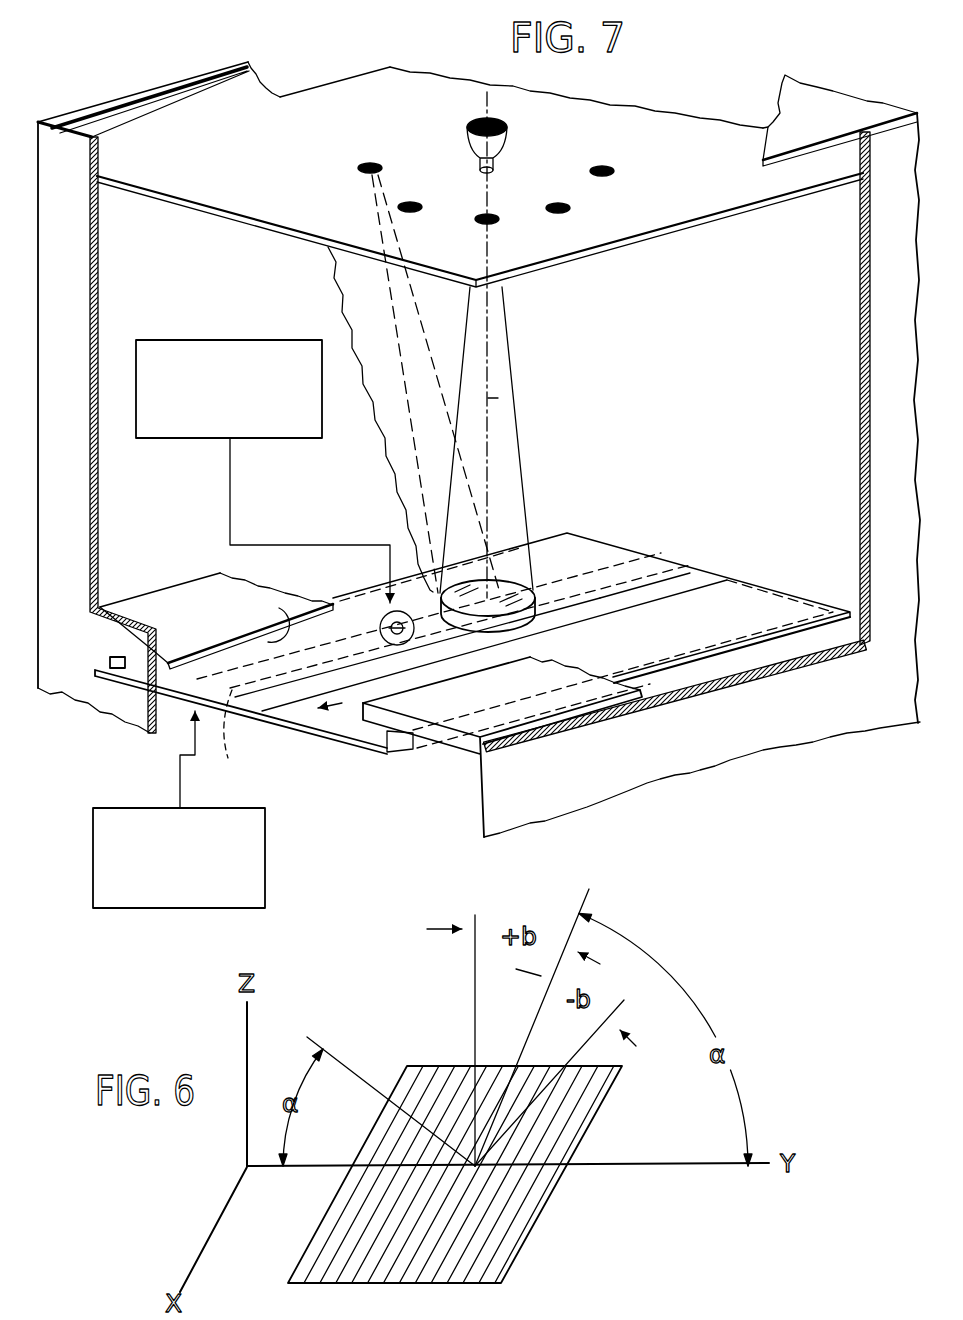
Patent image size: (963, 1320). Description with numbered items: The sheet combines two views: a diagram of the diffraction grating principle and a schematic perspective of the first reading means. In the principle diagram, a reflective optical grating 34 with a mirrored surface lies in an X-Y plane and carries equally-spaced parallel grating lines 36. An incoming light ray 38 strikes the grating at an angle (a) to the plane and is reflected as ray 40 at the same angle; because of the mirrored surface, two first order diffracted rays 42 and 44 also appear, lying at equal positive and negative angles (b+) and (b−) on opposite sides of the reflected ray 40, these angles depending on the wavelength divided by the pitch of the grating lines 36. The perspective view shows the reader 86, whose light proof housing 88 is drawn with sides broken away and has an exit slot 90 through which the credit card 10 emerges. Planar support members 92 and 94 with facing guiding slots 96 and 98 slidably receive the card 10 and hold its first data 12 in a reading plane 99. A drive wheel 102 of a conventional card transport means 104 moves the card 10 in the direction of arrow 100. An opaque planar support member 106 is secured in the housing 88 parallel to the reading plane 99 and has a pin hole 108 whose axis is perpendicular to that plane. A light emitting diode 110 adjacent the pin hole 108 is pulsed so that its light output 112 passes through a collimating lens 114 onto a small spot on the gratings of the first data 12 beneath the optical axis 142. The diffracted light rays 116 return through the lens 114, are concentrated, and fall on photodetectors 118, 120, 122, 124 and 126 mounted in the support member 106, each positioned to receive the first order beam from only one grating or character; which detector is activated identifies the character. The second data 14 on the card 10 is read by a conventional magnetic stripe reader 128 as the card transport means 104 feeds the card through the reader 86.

In FIG. 7, the credit card 10 is at (726, 597).
In FIG. 7, the first data 12 is at (693, 574).
In FIG. 7, the second data 14 is at (240, 735).
In FIG. 7, the reader 86 is at (292, 78).
In FIG. 7, the light proof housing 88 is at (733, 740).
In FIG. 7, the exit slot 90 is at (125, 650).
In FIG. 7, the planar support member 92 is at (165, 593).
In FIG. 7, the planar support member 94 is at (457, 757).
In FIG. 7, the guiding slot 96 is at (270, 618).
In FIG. 7, the guiding slot 98 is at (395, 748).
In FIG. 7, the reading plane 99 is at (567, 560).
In FIG. 7, the arrow 100 is at (342, 704).
In FIG. 7, the drive wheel 102 is at (381, 620).
In FIG. 7, the card transport means 104 is at (203, 338).
In FIG. 7, the opaque planar support member 106 is at (713, 212).
In FIG. 7, the pin hole 108 is at (498, 166).
In FIG. 7, the light emitting diode 110 is at (467, 140).
In FIG. 7, the light output 112 is at (506, 338).
In FIG. 7, the collimating lens 114 is at (520, 590).
In FIG. 7, the light rays 116 is at (390, 305).
In FIG. 7, the photodetector 118 is at (366, 163).
In FIG. 7, the photodetector 120 is at (396, 207).
In FIG. 7, the photodetector 122 is at (490, 222).
In FIG. 7, the photodetector 124 is at (572, 209).
In FIG. 7, the photodetector 126 is at (616, 172).
In FIG. 7, the magnetic stripe reader 128 is at (265, 850).
In FIG. 7, the optical axis 142 is at (490, 398).
In FIG. 6, the reflective optical grating 34 is at (553, 1195).
In FIG. 6, the grating lines 36 is at (512, 1237).
In FIG. 6, the incoming light ray 38 is at (346, 1064).
In FIG. 6, the reflected ray 40 is at (572, 900).
In FIG. 6, the diffracted ray 42 is at (471, 985).
In FIG. 6, the diffracted ray 44 is at (596, 1036).